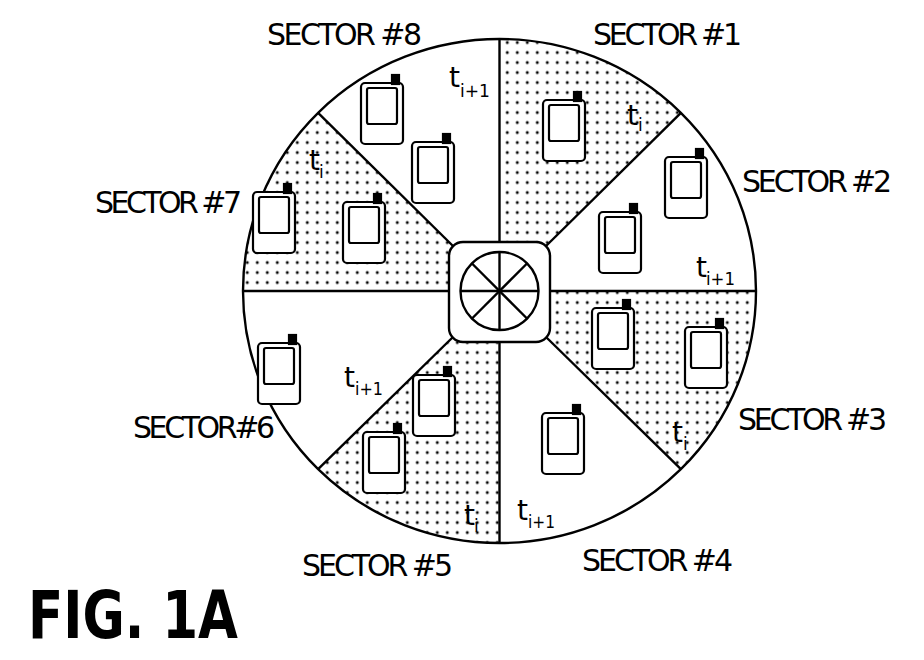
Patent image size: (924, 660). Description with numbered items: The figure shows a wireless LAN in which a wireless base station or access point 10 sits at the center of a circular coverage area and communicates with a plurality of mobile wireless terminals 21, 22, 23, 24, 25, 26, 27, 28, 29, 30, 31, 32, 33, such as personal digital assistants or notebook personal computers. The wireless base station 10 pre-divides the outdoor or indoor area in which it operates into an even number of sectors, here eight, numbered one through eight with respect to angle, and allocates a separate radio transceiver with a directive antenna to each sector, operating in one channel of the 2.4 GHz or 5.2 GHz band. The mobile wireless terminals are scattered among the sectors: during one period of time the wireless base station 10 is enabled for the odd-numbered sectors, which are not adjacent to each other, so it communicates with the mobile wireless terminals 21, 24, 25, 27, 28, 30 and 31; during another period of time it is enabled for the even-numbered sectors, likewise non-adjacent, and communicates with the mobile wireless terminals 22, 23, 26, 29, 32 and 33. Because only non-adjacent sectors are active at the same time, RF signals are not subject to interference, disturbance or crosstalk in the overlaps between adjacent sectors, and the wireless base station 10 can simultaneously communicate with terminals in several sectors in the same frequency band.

The wireless base station 10 is at (449, 314).
The mobile wireless terminal 21 is at (545, 155).
The mobile wireless terminal 22 is at (687, 218).
The mobile wireless terminal 23 is at (641, 233).
The mobile wireless terminal 24 is at (622, 358).
The mobile wireless terminal 25 is at (685, 352).
The mobile wireless terminal 26 is at (584, 450).
The mobile wireless terminal 27 is at (455, 425).
The mobile wireless terminal 28 is at (405, 464).
The mobile wireless terminal 29 is at (300, 382).
The mobile wireless terminal 30 is at (385, 233).
The mobile wireless terminal 31 is at (295, 233).
The mobile wireless terminal 32 is at (454, 163).
The mobile wireless terminal 33 is at (403, 126).